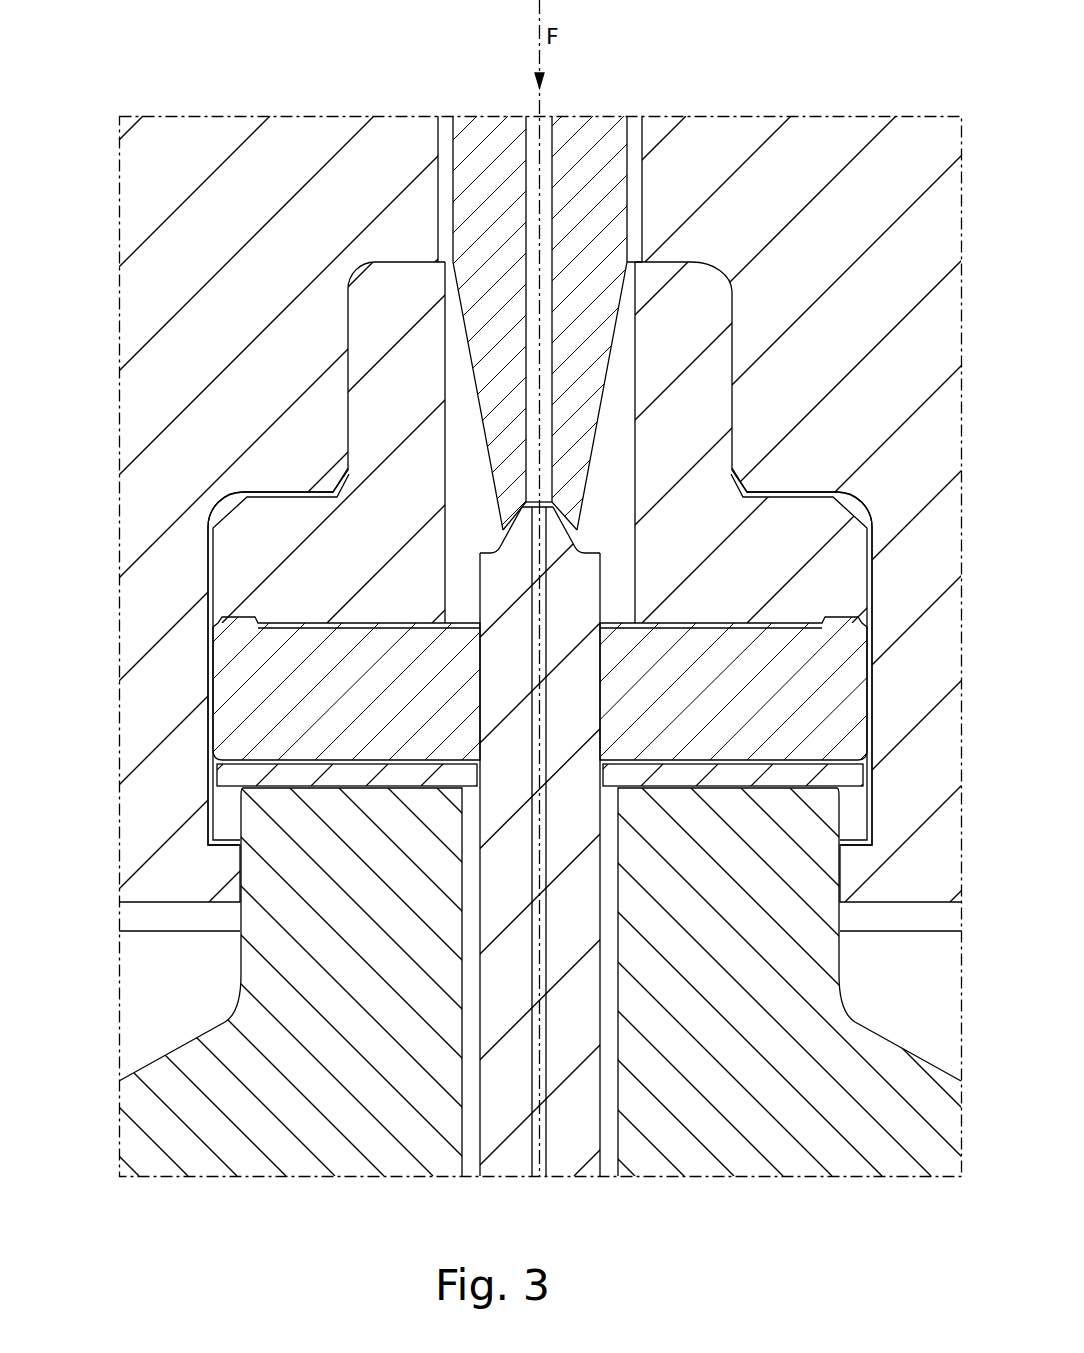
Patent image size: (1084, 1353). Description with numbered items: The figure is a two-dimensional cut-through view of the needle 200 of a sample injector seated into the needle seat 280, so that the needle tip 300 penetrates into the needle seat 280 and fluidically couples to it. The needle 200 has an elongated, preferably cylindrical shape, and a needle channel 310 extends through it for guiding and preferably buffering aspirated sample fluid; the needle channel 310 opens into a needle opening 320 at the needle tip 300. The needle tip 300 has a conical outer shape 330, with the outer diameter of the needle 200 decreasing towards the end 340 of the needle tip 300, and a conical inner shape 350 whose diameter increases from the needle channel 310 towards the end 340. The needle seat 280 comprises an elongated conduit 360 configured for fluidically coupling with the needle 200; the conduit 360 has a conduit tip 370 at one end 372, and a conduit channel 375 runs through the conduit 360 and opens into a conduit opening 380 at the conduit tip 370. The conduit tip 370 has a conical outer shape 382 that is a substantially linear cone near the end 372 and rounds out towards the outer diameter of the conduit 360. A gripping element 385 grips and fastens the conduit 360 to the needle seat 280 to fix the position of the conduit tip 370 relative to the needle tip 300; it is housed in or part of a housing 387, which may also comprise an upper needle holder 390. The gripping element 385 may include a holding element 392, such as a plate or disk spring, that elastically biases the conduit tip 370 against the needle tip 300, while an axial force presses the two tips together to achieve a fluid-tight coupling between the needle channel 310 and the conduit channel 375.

The needle 200 is at (590, 133).
The needle seat 280 is at (331, 301).
The needle tip 300 is at (585, 370).
The needle channel 310 is at (540, 288).
The needle opening 320 is at (497, 524).
The conical outer shape 330 is at (476, 384).
The end of the needle tip 340 is at (497, 546).
The conical inner shape 350 is at (560, 508).
The conduit 360 is at (578, 1155).
The conduit tip 370 is at (578, 545).
The end of the conduit tip 372 is at (524, 500).
The conduit channel 375 is at (545, 955).
The conduit opening 380 is at (581, 497).
The conical outer shape 382 is at (585, 524).
The gripping element 385 is at (886, 625).
The housing 387 is at (222, 803).
The upper needle holder 390 is at (240, 543).
The holding element 392 is at (238, 695).